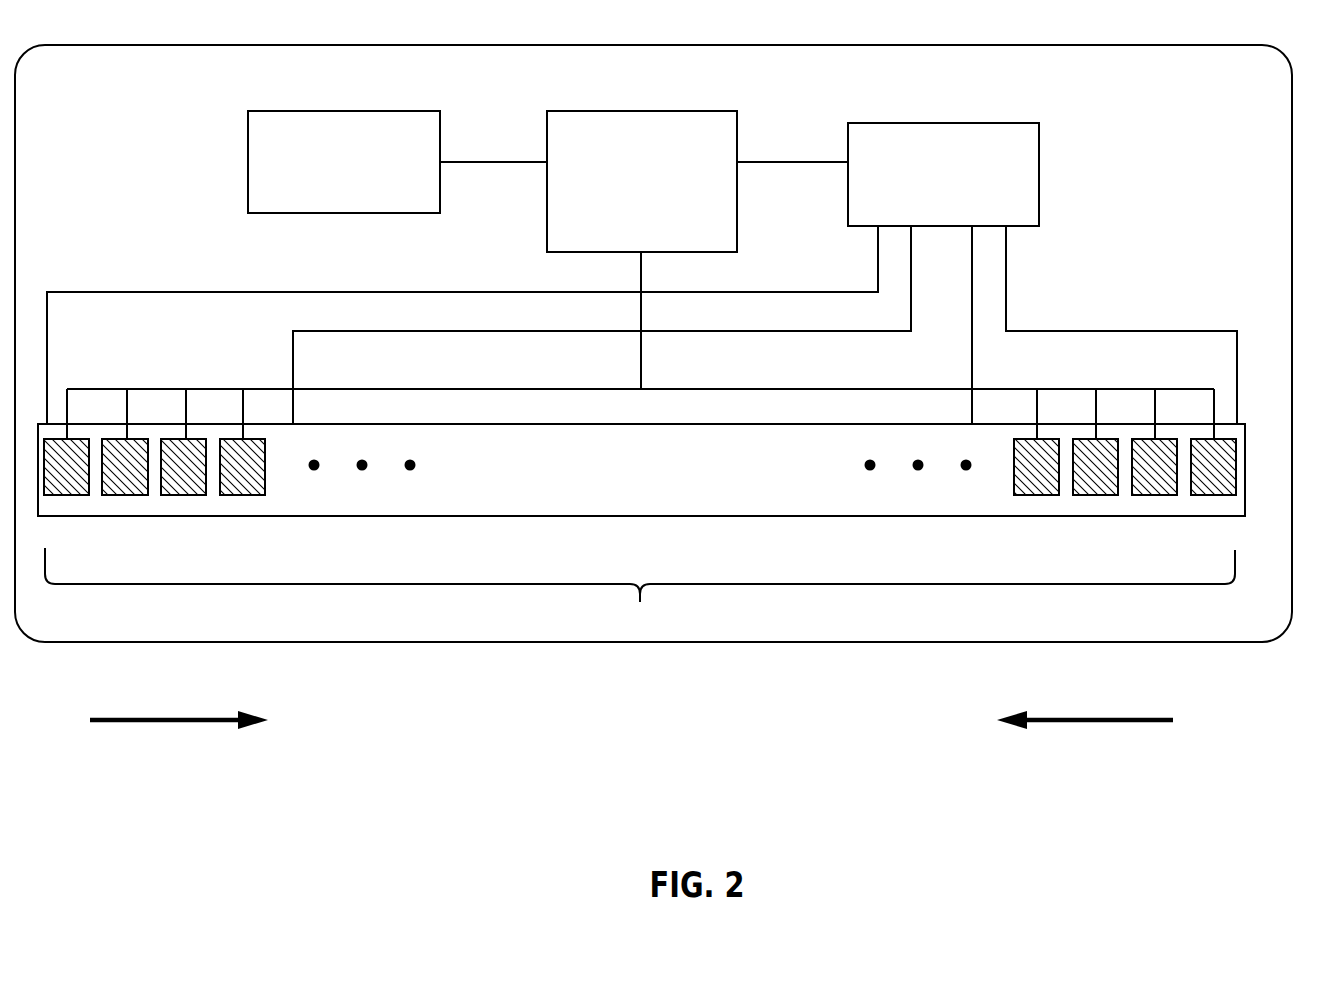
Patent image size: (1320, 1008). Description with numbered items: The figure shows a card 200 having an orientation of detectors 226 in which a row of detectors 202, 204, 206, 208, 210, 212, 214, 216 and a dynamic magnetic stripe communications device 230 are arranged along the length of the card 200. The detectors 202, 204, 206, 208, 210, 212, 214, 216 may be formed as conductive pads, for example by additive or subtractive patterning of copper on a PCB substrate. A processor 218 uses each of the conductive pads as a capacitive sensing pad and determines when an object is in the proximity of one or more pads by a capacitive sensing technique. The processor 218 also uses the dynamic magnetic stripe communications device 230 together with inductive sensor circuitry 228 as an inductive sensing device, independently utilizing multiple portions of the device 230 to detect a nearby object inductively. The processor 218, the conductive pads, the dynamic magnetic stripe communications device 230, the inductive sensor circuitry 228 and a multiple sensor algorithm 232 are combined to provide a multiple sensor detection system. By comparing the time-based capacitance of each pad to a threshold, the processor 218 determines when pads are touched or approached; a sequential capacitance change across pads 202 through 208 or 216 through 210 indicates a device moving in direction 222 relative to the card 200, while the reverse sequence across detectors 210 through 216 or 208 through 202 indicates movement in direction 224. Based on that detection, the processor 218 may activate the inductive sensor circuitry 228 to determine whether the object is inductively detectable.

The card 200 is at (1297, 388).
The detector 202 is at (64, 496).
The detector 204 is at (123, 496).
The detector 206 is at (181, 496).
The detector 208 is at (244, 496).
The detector 210 is at (1208, 496).
The detector 212 is at (1152, 496).
The detector 214 is at (1093, 496).
The detector 216 is at (1034, 496).
The processor 218 is at (740, 123).
The direction 222 is at (140, 722).
The direction 224 is at (1125, 722).
The orientation of detectors 226 is at (640, 590).
The inductive sensor circuitry 228 is at (848, 130).
The dynamic magnetic stripe communications device 230 is at (735, 437).
The multiple sensor algorithm 232 is at (468, 108).